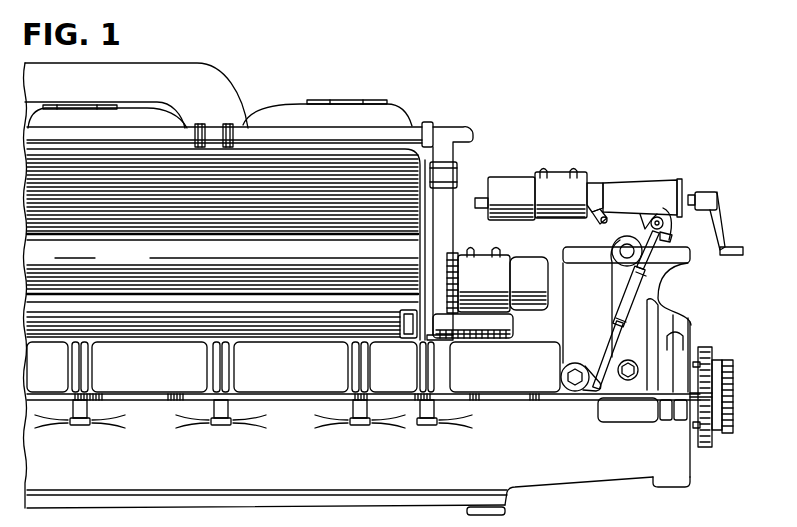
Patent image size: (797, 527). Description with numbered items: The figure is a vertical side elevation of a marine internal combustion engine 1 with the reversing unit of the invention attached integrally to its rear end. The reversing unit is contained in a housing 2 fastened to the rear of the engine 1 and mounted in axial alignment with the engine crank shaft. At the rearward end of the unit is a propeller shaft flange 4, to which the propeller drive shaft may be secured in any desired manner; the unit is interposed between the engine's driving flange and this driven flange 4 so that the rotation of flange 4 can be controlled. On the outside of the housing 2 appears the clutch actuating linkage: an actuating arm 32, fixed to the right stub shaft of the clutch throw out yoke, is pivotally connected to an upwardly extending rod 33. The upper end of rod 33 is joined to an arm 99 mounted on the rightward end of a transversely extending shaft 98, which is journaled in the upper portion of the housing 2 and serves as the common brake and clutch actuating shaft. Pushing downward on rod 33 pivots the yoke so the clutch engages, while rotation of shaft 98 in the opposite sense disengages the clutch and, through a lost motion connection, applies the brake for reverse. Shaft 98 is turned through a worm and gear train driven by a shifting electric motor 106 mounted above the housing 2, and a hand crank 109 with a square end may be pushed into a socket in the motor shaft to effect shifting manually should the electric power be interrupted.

The internal combustion engine 1 is at (394, 115).
The housing 2 is at (640, 473).
The propeller shaft flange 4 is at (728, 384).
The actuating arm 32 is at (583, 385).
The rod 33 is at (610, 343).
The shaft 98 is at (619, 256).
The arm 99 is at (643, 230).
The shifting electric motor 106 is at (514, 184).
The hand crank 109 is at (720, 231).